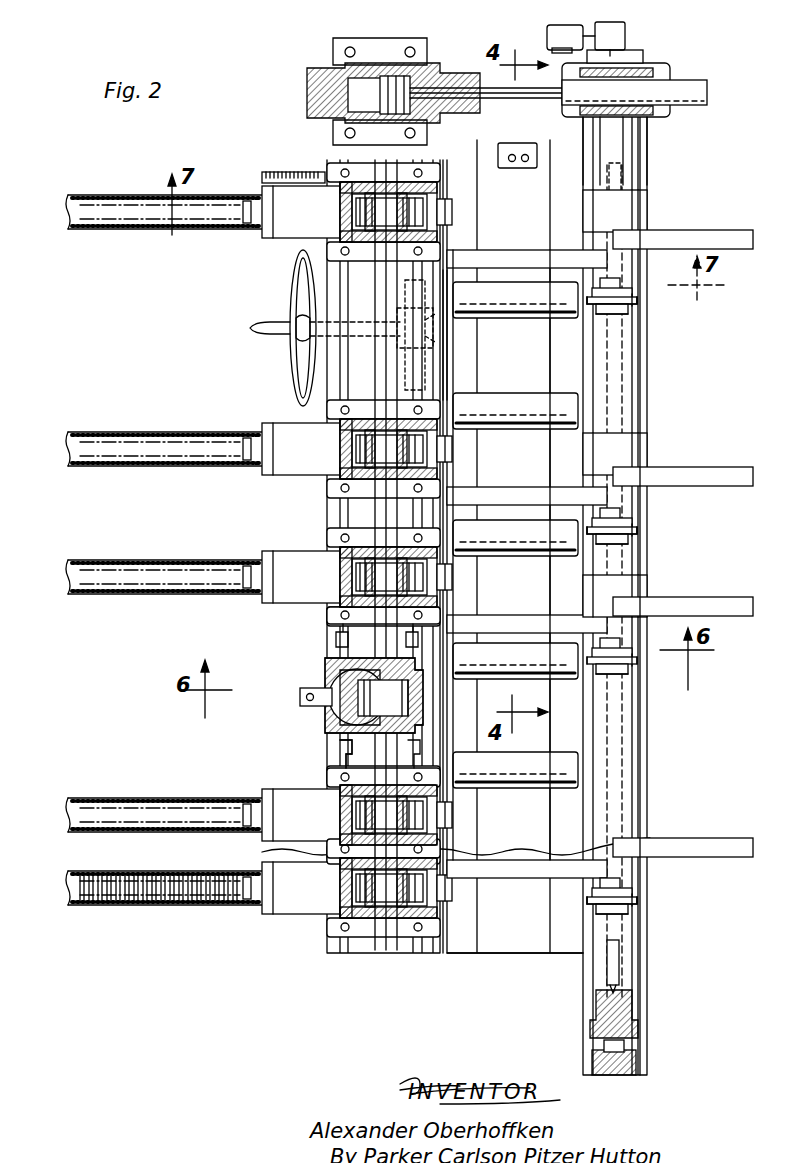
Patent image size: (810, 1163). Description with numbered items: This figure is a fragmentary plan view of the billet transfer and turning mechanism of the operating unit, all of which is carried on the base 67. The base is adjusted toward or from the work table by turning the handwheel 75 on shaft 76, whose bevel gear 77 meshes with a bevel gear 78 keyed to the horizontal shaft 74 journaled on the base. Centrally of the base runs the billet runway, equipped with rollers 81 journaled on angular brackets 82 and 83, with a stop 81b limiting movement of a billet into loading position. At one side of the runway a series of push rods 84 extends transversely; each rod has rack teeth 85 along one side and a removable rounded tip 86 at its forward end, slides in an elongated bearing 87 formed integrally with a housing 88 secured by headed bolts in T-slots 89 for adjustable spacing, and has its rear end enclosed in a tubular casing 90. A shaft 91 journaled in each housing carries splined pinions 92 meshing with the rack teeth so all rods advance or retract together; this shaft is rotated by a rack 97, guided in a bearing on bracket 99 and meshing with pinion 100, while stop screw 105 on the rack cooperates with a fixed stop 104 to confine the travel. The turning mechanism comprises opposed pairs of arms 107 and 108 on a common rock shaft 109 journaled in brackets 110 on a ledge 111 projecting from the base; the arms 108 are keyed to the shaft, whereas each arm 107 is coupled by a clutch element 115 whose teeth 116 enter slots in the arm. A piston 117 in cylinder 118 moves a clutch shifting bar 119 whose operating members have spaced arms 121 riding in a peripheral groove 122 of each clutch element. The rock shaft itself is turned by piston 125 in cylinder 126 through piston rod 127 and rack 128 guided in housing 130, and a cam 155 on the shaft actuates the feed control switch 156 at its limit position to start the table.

The base 67 is at (504, 956).
The horizontal shaft 74 is at (405, 380).
The handwheel 75 is at (290, 366).
The shaft 76 is at (394, 302).
The bevel gear 77 is at (459, 335).
The bevel gear 78 is at (458, 335).
The rollers 81 is at (540, 752).
The stop 81b is at (508, 146).
The angular bracket 82 is at (460, 374).
The angular bracket 83 is at (550, 374).
The push rods 84 is at (204, 204).
The rack teeth 85 is at (120, 902).
The removable tip 86 is at (452, 210).
The elongated bearing 87 is at (297, 242).
The housing 88 is at (428, 198).
The T-slots 89 is at (336, 503).
The tubular casings 90 is at (124, 199).
The shaft 91 is at (372, 636).
The pinion 92 is at (350, 208).
The rack 97 is at (344, 713).
The bracket 99 is at (408, 702).
The pinion 100 is at (342, 674).
The fixed stop 104 is at (300, 688).
The stop screw 105 is at (300, 706).
The arms 107 is at (530, 258).
The arms 108 is at (738, 224).
The rock shaft 109 is at (628, 152).
The brackets 110 is at (636, 212).
The shelf or ledge 111 is at (640, 768).
The clutch element 115 is at (648, 312).
The clutch teeth 116 is at (626, 290).
The piston 117 is at (624, 1052).
The cylinder 118 is at (630, 1030).
The clutch shifting bar 119 is at (620, 962).
The spaced arms 121 is at (592, 303).
The peripheral groove 122 is at (624, 318).
The piston 125 is at (406, 104).
The cylinder 126 is at (324, 132).
The piston rod 127 is at (506, 96).
The rack 128 is at (691, 104).
The housing 130 is at (632, 116).
The cam 155 is at (626, 32).
The feed control switch 156 is at (546, 33).